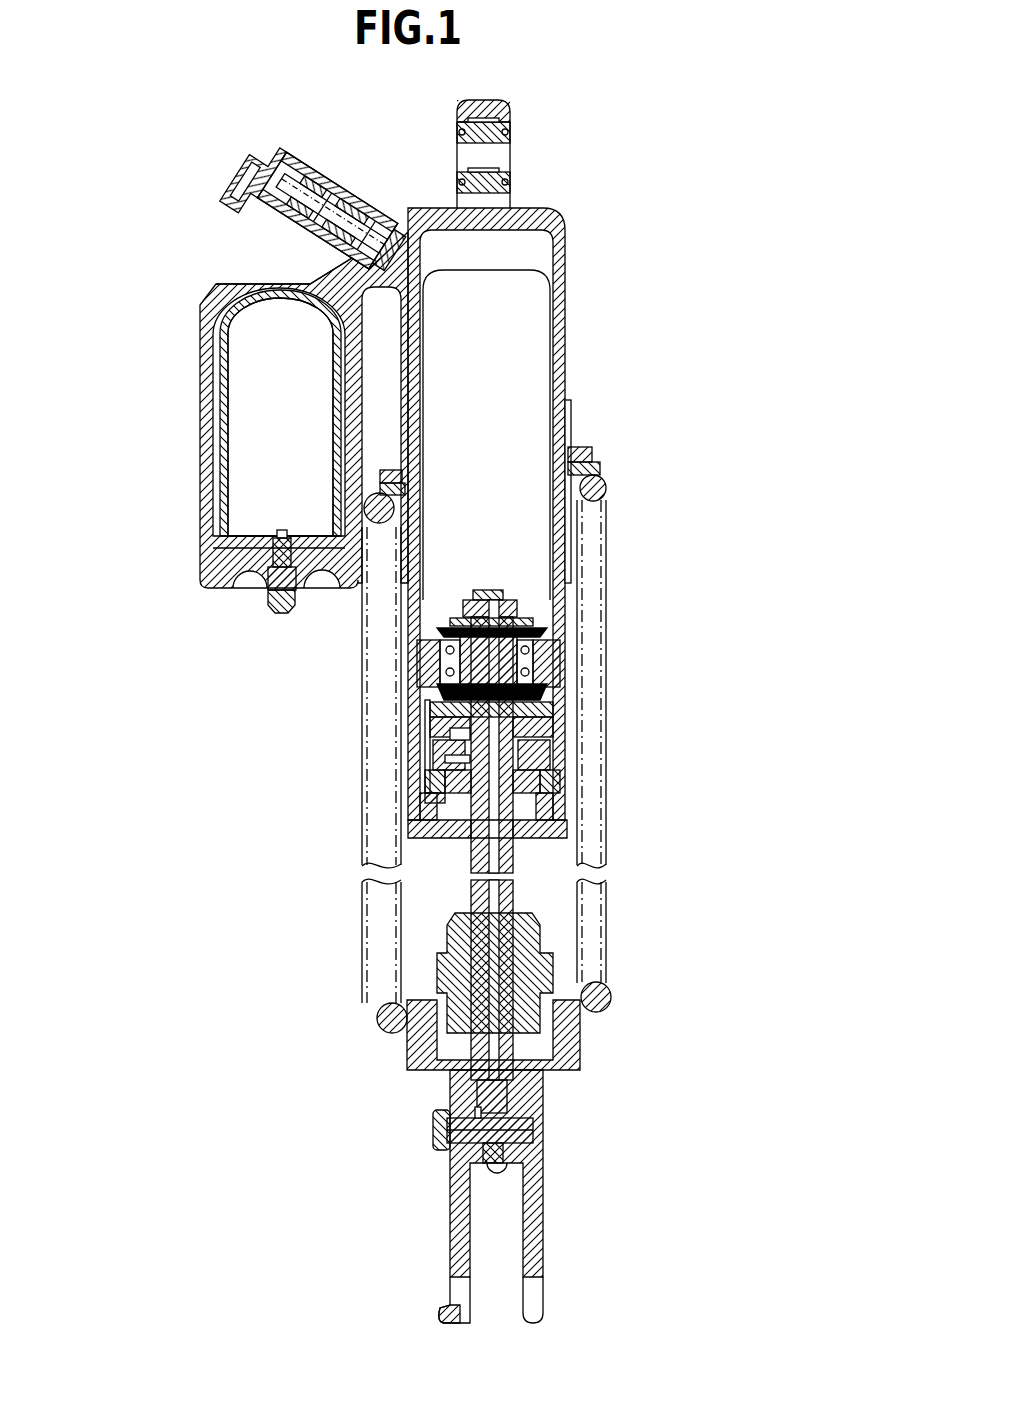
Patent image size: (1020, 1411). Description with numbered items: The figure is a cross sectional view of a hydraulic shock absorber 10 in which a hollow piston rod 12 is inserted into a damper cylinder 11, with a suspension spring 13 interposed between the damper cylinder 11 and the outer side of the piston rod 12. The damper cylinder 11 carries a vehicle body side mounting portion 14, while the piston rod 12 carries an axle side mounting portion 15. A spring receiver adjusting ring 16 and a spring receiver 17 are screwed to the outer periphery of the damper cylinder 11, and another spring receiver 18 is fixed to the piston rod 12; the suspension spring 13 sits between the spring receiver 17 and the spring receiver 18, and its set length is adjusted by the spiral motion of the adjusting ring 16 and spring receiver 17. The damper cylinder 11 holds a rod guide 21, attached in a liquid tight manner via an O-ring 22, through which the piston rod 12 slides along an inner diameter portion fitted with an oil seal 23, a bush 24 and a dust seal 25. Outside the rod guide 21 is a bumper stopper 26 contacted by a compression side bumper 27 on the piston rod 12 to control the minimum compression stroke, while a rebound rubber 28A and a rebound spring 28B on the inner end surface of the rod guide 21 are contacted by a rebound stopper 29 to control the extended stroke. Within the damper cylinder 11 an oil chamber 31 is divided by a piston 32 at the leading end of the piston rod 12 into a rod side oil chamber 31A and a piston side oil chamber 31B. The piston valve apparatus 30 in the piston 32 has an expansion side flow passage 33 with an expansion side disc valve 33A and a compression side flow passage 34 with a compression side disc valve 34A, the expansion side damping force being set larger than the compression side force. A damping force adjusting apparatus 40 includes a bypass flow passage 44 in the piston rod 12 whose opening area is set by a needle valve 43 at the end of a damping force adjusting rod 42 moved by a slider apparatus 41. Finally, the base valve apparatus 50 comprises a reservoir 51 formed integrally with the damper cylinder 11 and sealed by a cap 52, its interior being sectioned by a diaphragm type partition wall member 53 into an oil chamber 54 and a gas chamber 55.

The hydraulic shock absorber 10 is at (636, 181).
The damper cylinder 11 is at (558, 293).
The piston rod 12 is at (500, 897).
The suspension spring 13 is at (607, 952).
The vehicle body side mounting portion 14 is at (500, 110).
The axle side mounting portion 15 is at (545, 1312).
The spring receiver adjusting ring 16 is at (592, 467).
The spring receiver 17 is at (601, 487).
The spring receiver 18 is at (606, 1010).
The rod guide 21 is at (542, 796).
The O-ring 22 is at (560, 776).
The oil seal 23 is at (552, 741).
The bush 24 is at (427, 796).
The dust seal 25 is at (545, 826).
The bumper stopper 26 is at (548, 839).
The compression side bumper 27 is at (530, 950).
The rebound rubber 28A is at (553, 723).
The rebound spring 28B is at (553, 708).
The rebound stopper 29 is at (550, 690).
The piston valve apparatus 30 is at (448, 576).
The oil chamber 31 is at (530, 336).
The rod side oil chamber 31A is at (428, 700).
The piston side oil chamber 31B is at (537, 381).
The piston 32 is at (547, 632).
The expansion side flow passage 33 is at (535, 662).
The expansion side disc valve 33A is at (530, 622).
The compression side flow passage 34 is at (440, 655).
The compression side disc valve 34A is at (455, 683).
The damping force adjusting apparatus 40 is at (424, 1160).
The slider apparatus 41 is at (424, 1119).
The damping force adjusting rod 42 is at (514, 915).
The needle valve 43 is at (447, 759).
The bypass flow passage 44 is at (452, 734).
The base valve apparatus 50 is at (333, 155).
The reservoir 51 is at (199, 450).
The cap 52 is at (240, 590).
The partition wall member 53 is at (217, 312).
The oil chamber 54 is at (243, 283).
The gas chamber 55 is at (233, 392).